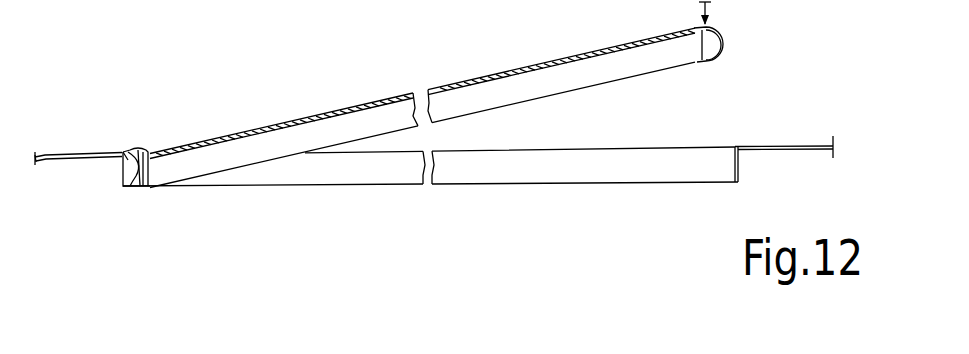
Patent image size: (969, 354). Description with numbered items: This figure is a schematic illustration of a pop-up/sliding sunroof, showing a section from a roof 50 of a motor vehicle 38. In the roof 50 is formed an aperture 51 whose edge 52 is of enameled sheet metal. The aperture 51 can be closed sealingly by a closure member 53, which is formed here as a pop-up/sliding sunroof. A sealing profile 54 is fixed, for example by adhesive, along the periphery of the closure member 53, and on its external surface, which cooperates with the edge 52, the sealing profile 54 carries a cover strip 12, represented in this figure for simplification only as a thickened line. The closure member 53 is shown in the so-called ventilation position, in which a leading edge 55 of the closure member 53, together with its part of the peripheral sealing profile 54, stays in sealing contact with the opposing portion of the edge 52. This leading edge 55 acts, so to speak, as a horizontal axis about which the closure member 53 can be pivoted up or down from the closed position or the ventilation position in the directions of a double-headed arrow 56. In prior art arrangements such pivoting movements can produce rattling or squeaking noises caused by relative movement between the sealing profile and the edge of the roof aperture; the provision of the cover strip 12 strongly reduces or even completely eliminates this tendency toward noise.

The cover strip 12 is at (130, 193).
The motor vehicle 38 is at (62, 127).
The roof 50 is at (93, 152).
The aperture 51 is at (605, 158).
The edge 52 is at (733, 162).
The closure member 53 is at (431, 86).
The sealing profile 54 is at (712, 58).
The leading edge 55 is at (141, 148).
The double-headed arrow 56 is at (506, 123).